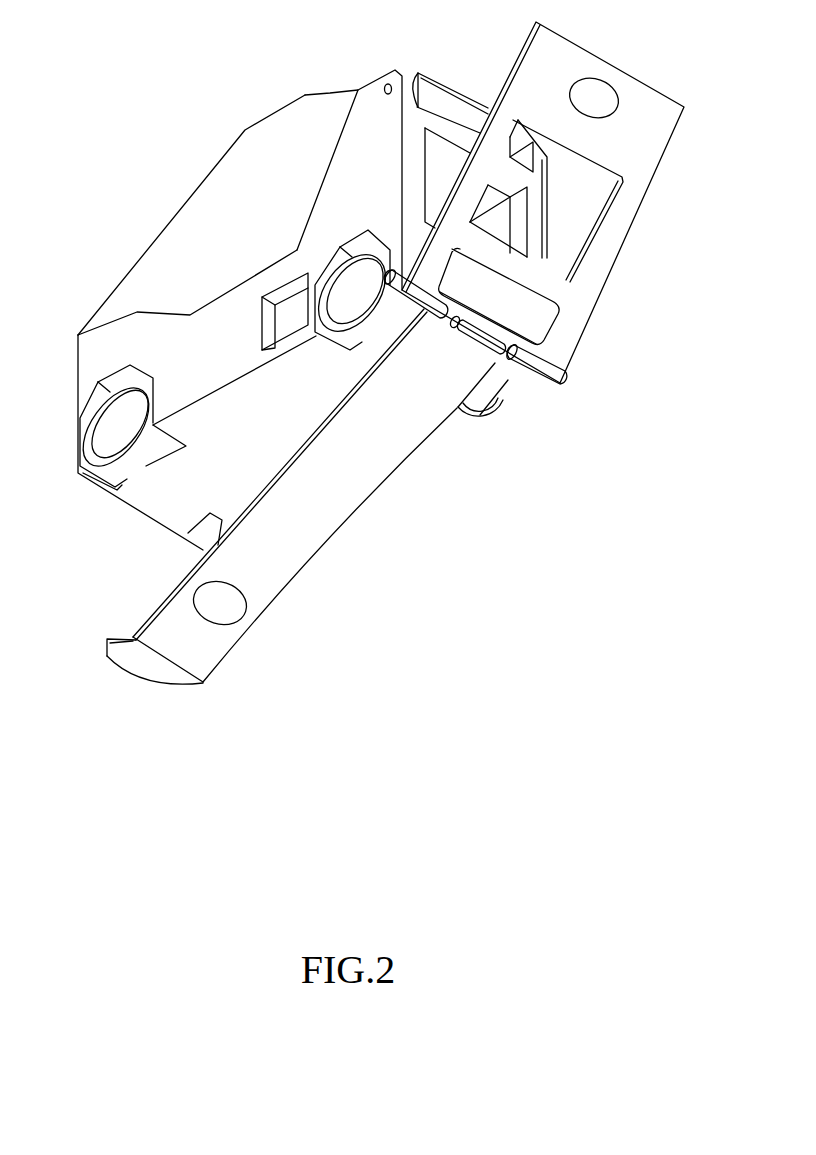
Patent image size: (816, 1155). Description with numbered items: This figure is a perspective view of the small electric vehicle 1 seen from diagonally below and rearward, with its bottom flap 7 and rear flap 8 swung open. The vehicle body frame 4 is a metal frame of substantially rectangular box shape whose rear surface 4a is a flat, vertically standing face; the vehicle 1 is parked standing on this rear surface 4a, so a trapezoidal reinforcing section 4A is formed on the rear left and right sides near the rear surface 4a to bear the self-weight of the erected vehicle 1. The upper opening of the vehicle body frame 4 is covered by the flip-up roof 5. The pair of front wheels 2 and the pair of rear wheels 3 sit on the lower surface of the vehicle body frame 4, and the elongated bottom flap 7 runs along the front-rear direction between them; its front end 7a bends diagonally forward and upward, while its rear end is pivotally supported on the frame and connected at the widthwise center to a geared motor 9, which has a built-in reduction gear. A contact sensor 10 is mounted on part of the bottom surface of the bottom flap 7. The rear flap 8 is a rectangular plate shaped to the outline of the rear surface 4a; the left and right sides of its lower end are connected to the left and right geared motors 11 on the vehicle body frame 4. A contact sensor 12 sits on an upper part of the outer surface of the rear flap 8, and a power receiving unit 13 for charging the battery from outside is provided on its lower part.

The vehicle 1 is at (273, 97).
The front wheels 2 is at (100, 441).
The rear wheels 3 is at (341, 318).
The vehicle body frame 4 is at (210, 320).
The reinforcing section 4A is at (337, 188).
The rear surface 4a is at (448, 90).
The flip-up roof 5 is at (215, 189).
The bottom flap 7 is at (351, 514).
The front end 7a is at (145, 666).
The rear flap 8 is at (632, 201).
The geared motor 9 is at (468, 320).
The contact sensor 10 is at (228, 592).
The geared motors 11 is at (415, 318).
The contact sensor 12 is at (604, 98).
The power receiving unit 13 is at (537, 323).